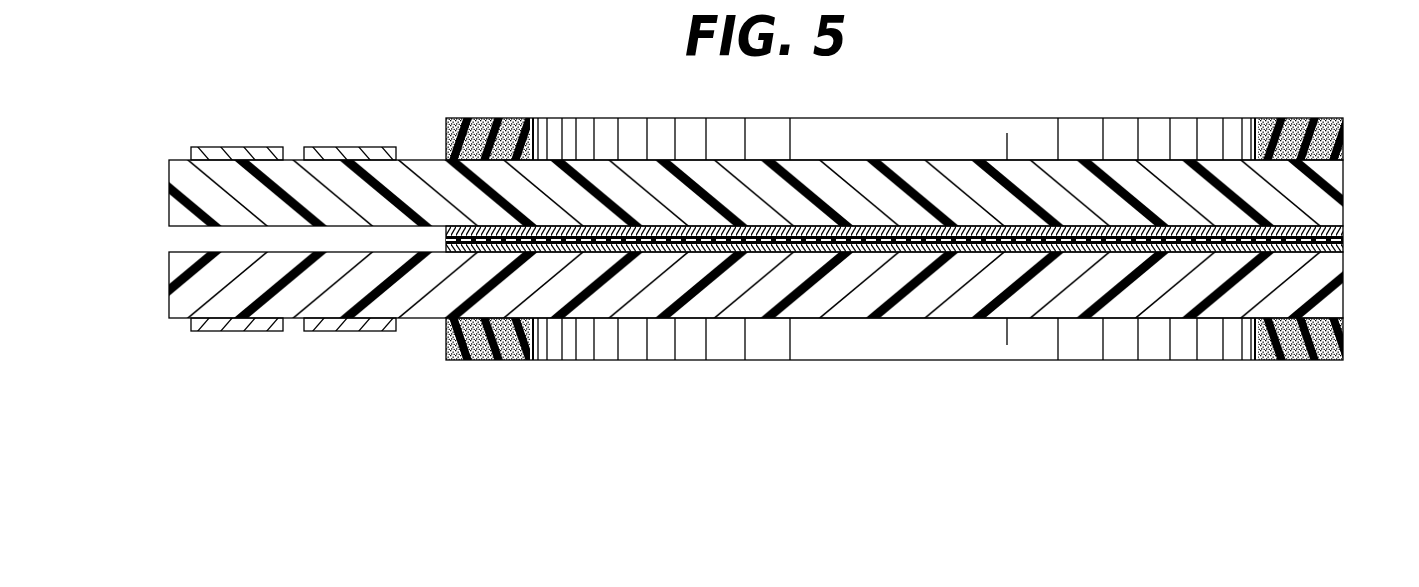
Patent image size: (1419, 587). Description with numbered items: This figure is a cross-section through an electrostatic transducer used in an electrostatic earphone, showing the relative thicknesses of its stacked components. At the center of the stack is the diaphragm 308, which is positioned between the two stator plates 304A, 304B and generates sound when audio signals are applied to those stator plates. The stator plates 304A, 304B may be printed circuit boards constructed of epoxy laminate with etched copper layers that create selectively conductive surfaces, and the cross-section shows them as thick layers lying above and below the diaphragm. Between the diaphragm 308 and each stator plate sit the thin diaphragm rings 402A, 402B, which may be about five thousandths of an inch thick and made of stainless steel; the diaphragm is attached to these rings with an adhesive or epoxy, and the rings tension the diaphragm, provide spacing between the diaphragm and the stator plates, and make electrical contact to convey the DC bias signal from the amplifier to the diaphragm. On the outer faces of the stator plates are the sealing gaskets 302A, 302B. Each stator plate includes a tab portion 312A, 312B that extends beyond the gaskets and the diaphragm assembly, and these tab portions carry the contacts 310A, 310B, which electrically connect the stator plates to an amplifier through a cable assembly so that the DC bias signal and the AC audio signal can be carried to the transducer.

The sealing gasket 302A is at (1320, 118).
The sealing gasket 302B is at (1297, 360).
The stator plate 304A is at (1343, 178).
The stator plate 304B is at (1343, 300).
The diaphragm 308 is at (1343, 240).
The contact 310A is at (237, 147).
The contact 310B is at (342, 147).
The tab portion 312A is at (755, 142).
The tab portion 312B is at (751, 334).
The diaphragm ring 402A is at (1343, 232).
The diaphragm ring 402B is at (1343, 248).